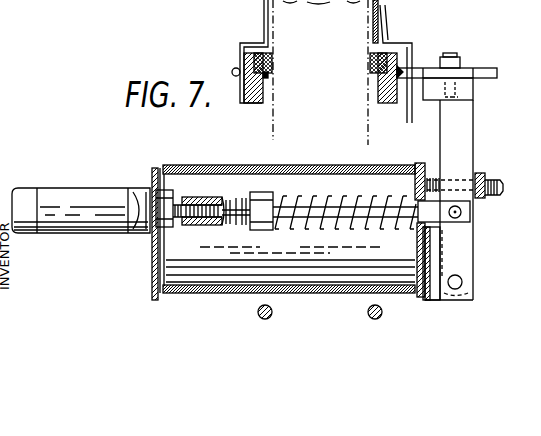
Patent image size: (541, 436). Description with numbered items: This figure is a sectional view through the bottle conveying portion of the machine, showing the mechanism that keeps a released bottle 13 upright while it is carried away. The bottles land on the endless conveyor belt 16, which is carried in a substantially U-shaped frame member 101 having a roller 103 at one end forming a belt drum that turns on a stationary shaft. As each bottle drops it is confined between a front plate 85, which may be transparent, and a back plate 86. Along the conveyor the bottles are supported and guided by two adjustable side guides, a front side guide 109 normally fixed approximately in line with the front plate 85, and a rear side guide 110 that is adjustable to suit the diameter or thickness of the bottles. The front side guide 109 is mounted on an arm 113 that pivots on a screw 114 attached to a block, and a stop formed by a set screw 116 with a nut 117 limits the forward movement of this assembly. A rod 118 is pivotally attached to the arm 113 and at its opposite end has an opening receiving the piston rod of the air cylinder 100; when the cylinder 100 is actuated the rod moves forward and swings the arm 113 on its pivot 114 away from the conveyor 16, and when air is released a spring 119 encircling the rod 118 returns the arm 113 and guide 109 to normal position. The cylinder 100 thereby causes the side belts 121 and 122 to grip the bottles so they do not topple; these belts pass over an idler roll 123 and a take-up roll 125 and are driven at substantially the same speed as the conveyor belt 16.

The bottle 13 is at (368, 139).
The conveyor belt 16 is at (228, 163).
The front plate 85 is at (385, 22).
The back plate 86 is at (267, 15).
The cylinder 100 is at (100, 196).
The frame member 101 is at (421, 164).
The roller 103 is at (218, 280).
The front side guide 109 is at (400, 62).
The rear side guide 110 is at (247, 105).
The arm 113 is at (474, 138).
The screw 114 is at (463, 282).
The set screw 116 is at (504, 189).
The nut 117 is at (480, 178).
The rod 118 is at (407, 228).
The spring 119 is at (362, 226).
The side belt 121 is at (372, 70).
The side belt 122 is at (275, 62).
The idler roll 123 is at (20, 11).
The take-up roll 125 is at (165, 2).